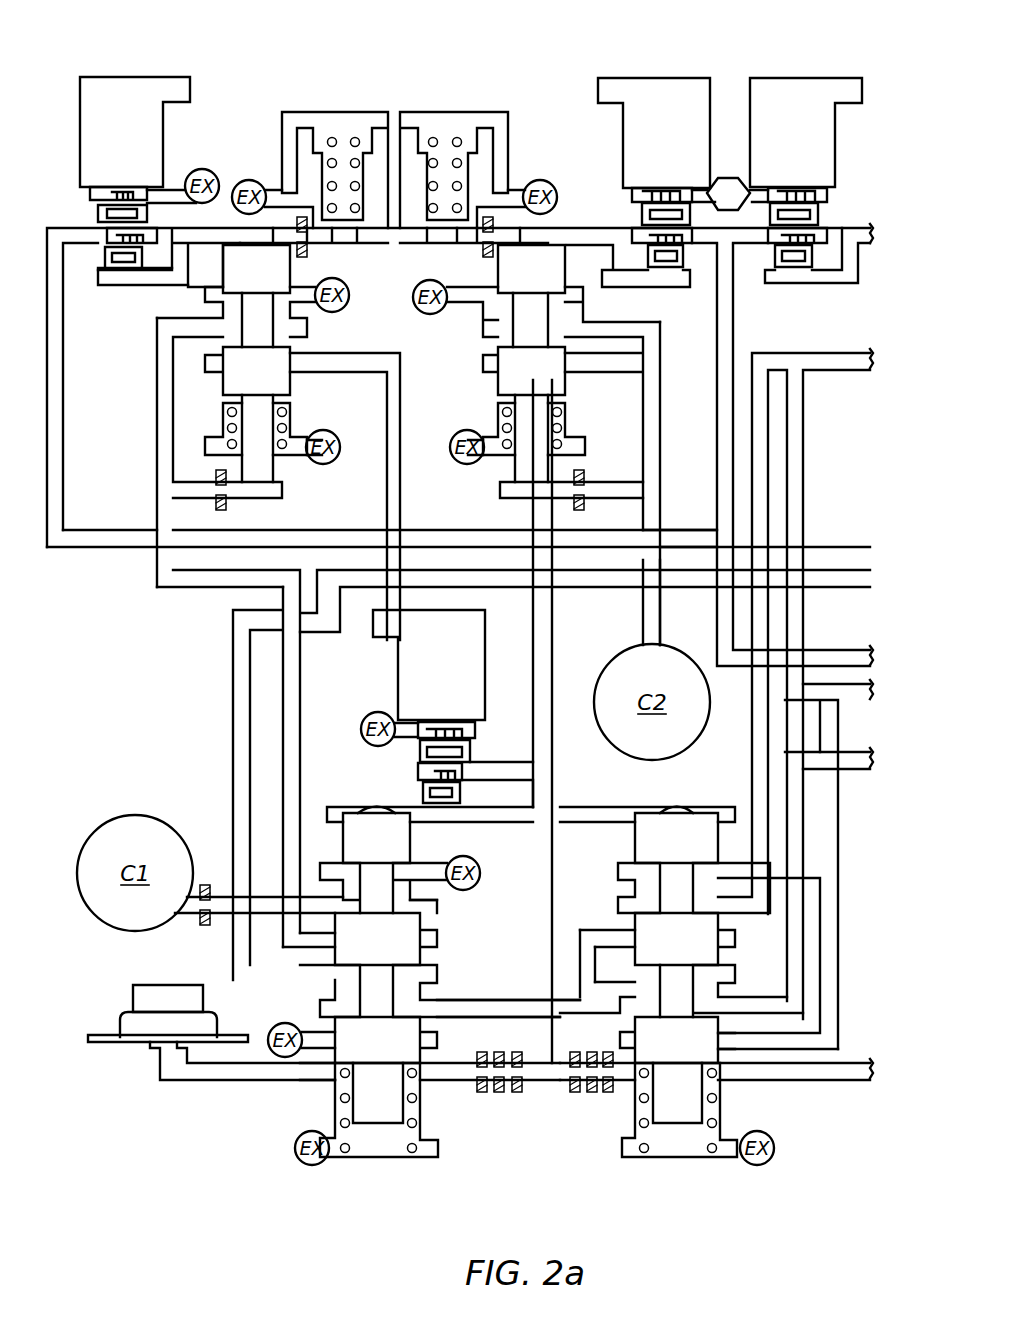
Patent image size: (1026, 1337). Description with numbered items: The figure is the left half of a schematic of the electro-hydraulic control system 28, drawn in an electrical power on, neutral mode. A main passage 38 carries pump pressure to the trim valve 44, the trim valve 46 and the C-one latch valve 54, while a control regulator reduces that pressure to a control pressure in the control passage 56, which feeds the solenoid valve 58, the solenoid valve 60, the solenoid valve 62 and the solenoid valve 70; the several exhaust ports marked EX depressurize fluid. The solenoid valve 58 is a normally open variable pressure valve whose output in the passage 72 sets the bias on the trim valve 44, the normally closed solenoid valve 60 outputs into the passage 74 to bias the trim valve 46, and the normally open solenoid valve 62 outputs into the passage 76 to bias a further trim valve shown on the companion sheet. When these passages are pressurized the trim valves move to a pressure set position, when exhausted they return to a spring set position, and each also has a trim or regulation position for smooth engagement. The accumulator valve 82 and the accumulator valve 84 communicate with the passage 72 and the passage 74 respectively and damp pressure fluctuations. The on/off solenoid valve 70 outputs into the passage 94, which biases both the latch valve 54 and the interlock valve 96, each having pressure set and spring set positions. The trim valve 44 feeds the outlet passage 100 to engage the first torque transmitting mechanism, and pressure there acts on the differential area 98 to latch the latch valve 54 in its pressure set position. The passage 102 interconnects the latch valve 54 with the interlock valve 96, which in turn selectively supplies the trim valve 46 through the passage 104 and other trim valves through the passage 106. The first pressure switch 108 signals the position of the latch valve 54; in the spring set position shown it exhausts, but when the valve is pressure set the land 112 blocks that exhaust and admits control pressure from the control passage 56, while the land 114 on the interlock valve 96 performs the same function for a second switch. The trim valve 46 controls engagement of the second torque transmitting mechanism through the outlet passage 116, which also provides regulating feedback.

The electro-hydraulic control system 28 is at (102, 34).
The main passage 38 is at (398, 412).
The trim valve 44 is at (297, 482).
The trim valve 46 is at (494, 490).
The C1 latch valve 54 is at (364, 1175).
The control passage 56 is at (80, 547).
The solenoid valve 58 is at (135, 150).
The solenoid valve 60 is at (675, 142).
The solenoid valve 62 is at (806, 142).
The solenoid valve 70 is at (453, 680).
The passage 72 is at (131, 284).
The passage 74 is at (640, 289).
The passage 76 is at (800, 287).
The accumulator valve 82 is at (345, 108).
The accumulator valve 84 is at (450, 108).
The passage 94 is at (462, 818).
The interlock valve 96 is at (671, 1175).
The differential area 98 is at (430, 908).
The outlet passage 100 is at (300, 700).
The passage 102 is at (462, 1000).
The passage 104 is at (752, 730).
The passage 106 is at (852, 770).
The first pressure switch 108 is at (128, 1000).
The land 112 is at (398, 1051).
The land 114 is at (697, 1051).
The outlet passage 116 is at (660, 408).